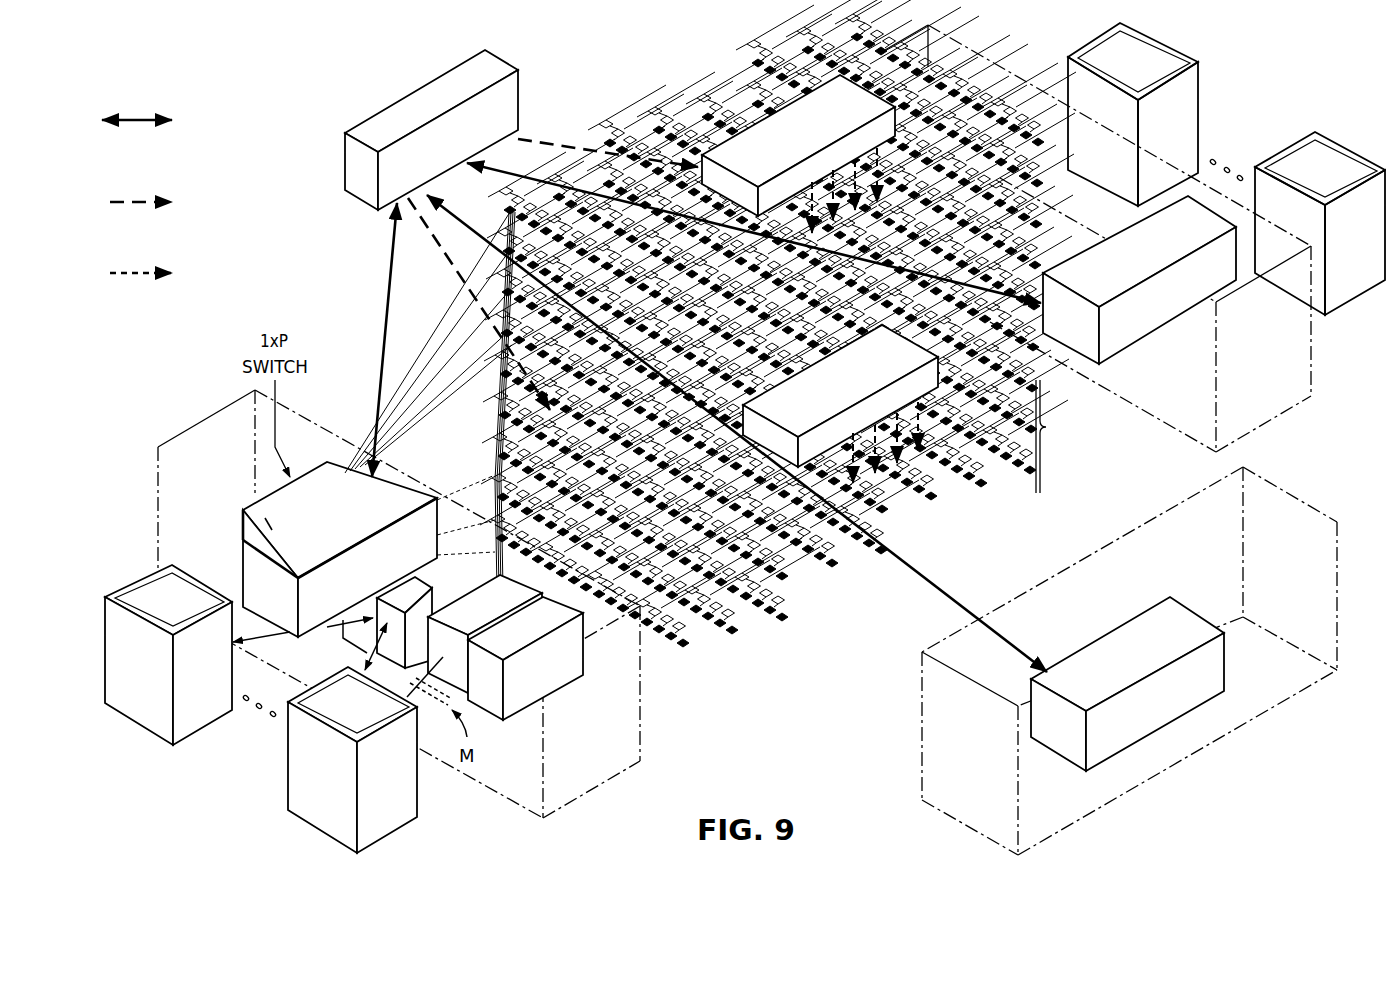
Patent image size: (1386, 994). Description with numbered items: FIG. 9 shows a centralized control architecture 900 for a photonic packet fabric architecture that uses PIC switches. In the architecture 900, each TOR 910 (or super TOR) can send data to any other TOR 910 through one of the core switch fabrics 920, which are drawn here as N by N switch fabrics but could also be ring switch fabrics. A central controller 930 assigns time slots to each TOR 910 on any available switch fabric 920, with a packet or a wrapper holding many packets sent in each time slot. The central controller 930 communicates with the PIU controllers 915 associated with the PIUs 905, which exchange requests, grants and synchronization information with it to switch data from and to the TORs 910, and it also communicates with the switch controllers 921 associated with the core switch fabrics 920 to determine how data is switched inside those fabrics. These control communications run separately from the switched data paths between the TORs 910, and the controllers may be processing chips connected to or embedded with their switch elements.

The centralized control architecture 900 is at (582, 83).
The PIU 905 is at (1320, 426).
The TOR 910 is at (203, 712).
The PIU controller 915 is at (253, 567).
The core switch fabric 920 is at (645, 137).
The switch controller 921 is at (836, 92).
The central controller 930 is at (418, 93).